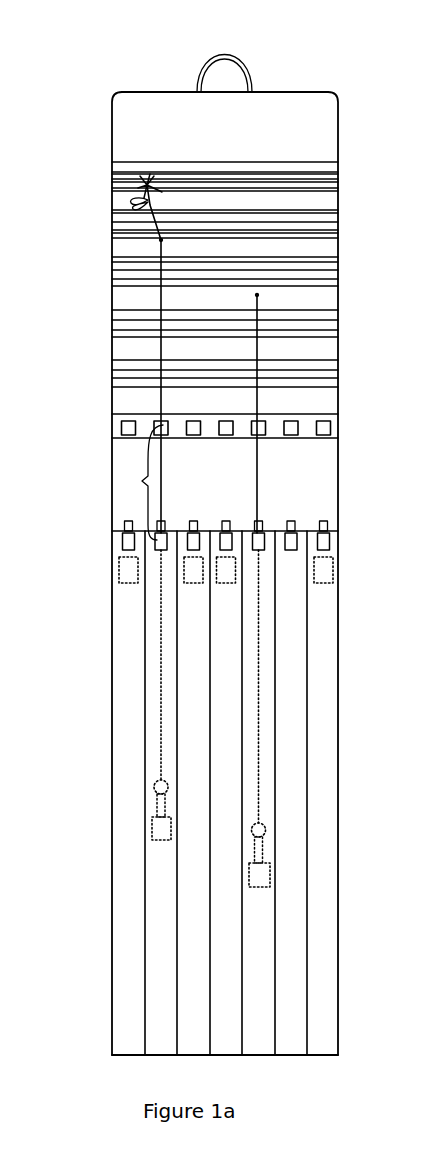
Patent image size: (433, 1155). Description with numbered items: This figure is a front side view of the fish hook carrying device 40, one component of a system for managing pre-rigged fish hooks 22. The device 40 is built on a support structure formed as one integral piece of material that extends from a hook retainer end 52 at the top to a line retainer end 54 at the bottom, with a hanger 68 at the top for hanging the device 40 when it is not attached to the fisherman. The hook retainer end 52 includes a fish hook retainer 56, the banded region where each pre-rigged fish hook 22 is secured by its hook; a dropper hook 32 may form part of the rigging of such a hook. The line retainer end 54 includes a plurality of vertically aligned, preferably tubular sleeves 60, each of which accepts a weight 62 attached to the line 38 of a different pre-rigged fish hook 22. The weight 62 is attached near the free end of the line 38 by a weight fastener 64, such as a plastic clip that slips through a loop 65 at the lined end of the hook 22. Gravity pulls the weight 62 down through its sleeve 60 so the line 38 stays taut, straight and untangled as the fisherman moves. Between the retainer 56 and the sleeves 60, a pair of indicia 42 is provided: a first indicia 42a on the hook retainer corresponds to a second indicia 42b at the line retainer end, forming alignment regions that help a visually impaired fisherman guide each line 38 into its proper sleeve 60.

The fish hook carrying device 40 is at (323, 80).
The hanger 68 is at (225, 55).
The hook retainer end 52 is at (160, 92).
The fish hook retainer 56 is at (143, 156).
The dropper hook 32 is at (313, 355).
The pre-rigged fish hook 22 is at (147, 218).
The pair of indicia 42 is at (146, 481).
The first indicia 42a is at (290, 430).
The second indicia 42b is at (297, 531).
The weight fastener 64 is at (125, 522).
The weight 62 is at (125, 567).
The loop 65 is at (157, 778).
The line 38 is at (160, 670).
The sleeve 60 is at (193, 968).
The line retainer end 54 is at (290, 1055).